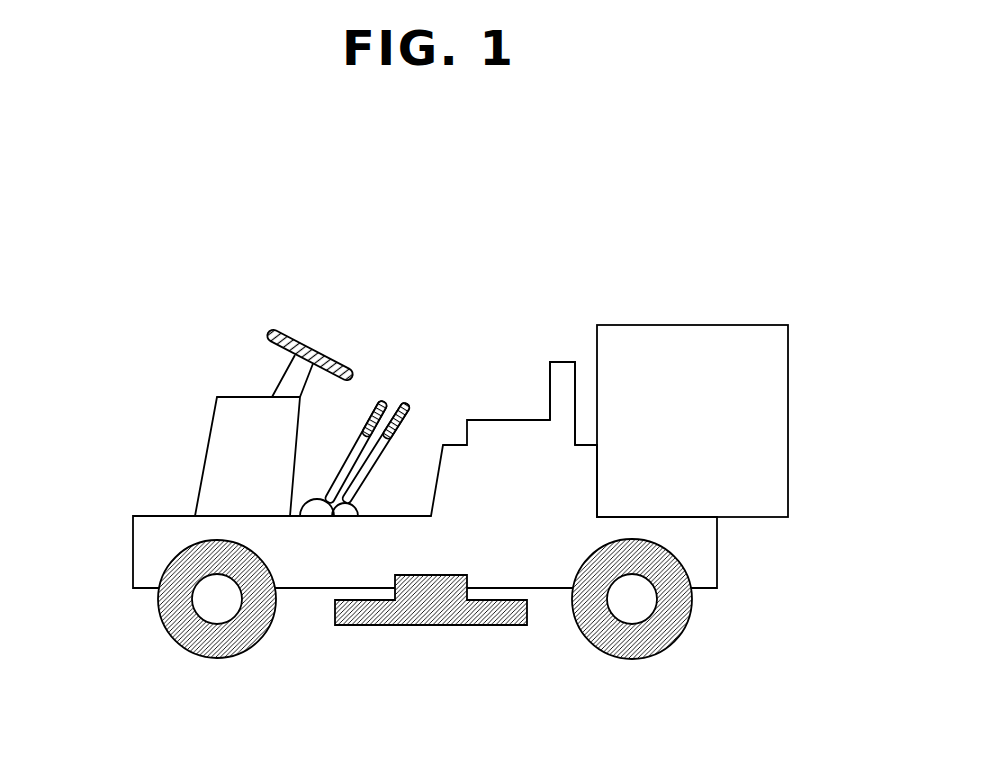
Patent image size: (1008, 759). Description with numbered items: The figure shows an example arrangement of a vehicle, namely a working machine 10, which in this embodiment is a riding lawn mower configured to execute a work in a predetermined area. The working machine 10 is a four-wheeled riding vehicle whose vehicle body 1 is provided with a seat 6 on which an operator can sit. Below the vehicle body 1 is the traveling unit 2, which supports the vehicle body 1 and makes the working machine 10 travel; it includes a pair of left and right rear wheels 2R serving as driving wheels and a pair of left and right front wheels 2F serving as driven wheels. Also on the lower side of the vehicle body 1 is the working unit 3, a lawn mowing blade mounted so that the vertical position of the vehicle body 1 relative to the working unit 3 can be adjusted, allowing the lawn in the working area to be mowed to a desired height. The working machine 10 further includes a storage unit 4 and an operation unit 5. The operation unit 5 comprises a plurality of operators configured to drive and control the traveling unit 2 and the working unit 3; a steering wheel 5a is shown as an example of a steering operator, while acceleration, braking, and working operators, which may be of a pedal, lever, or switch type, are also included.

The working machine 10 is at (460, 479).
The vehicle body 1 is at (133, 549).
The traveling unit 2 is at (380, 645).
The front wheels 2F is at (208, 660).
The rear wheels 2R is at (627, 660).
The working unit 3 is at (427, 625).
The storage unit 4 is at (788, 413).
The operation unit 5 is at (336, 377).
The steering wheel 5a is at (318, 351).
The seat 6 is at (563, 361).